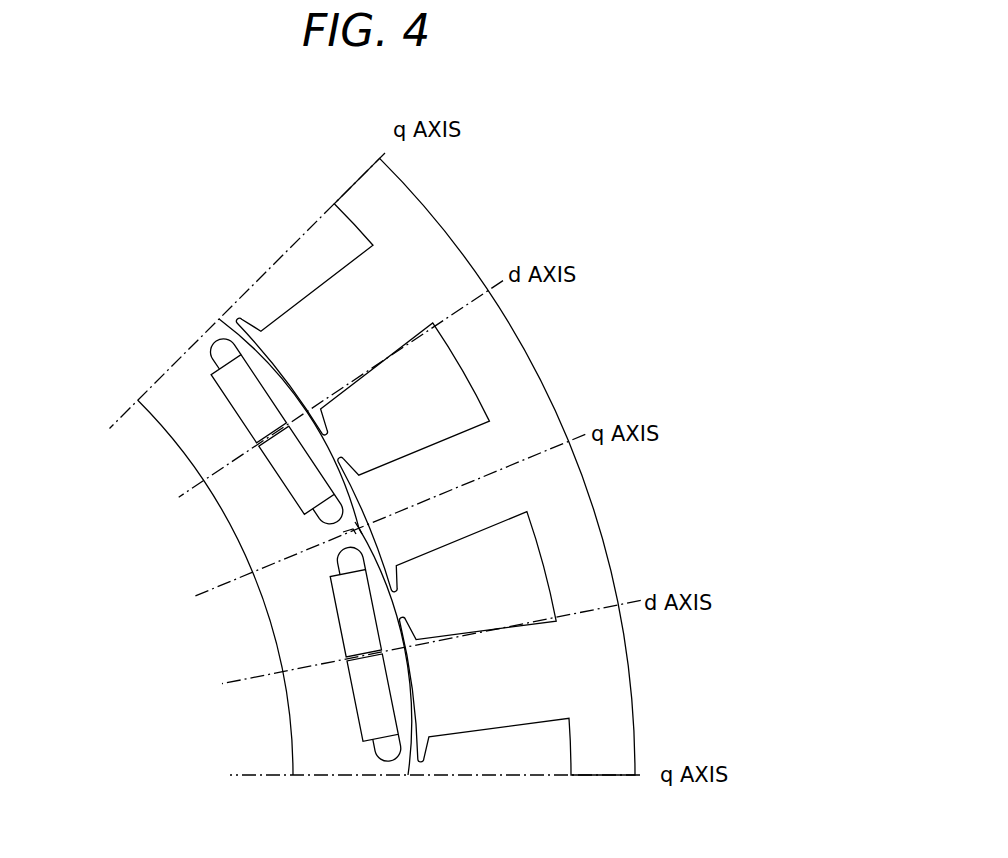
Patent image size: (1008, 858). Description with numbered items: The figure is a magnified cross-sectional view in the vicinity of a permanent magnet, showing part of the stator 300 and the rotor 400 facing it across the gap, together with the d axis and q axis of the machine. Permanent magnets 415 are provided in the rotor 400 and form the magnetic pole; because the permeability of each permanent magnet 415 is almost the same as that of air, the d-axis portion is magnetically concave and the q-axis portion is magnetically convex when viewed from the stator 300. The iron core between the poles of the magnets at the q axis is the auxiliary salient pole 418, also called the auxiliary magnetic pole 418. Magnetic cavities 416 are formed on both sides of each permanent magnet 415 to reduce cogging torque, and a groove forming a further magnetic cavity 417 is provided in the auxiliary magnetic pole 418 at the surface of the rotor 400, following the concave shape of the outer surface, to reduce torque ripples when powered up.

The stator 300 is at (422, 196).
The rotor 400 is at (166, 382).
The permanent magnet 415 is at (292, 468).
The magnetic cavity 416 is at (216, 350).
The magnetic cavity 417 is at (363, 531).
The auxiliary salient pole 418 is at (346, 537).